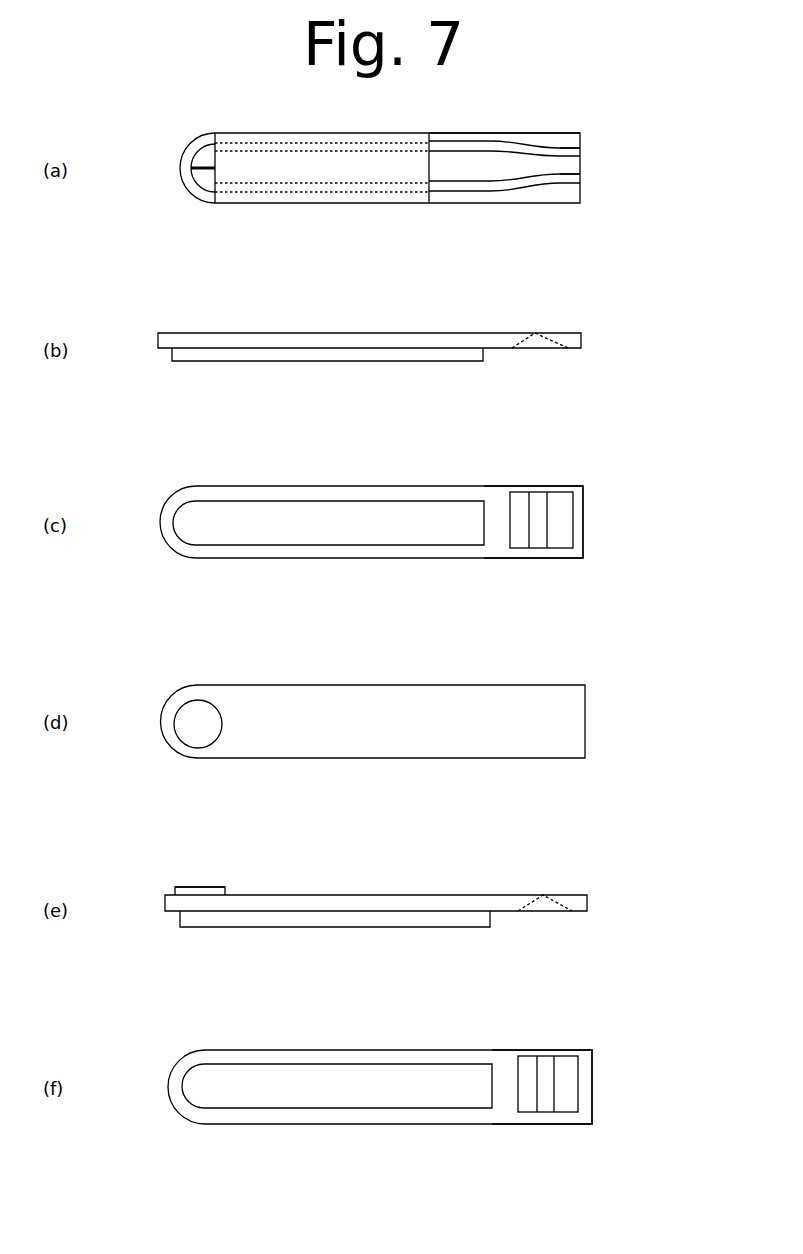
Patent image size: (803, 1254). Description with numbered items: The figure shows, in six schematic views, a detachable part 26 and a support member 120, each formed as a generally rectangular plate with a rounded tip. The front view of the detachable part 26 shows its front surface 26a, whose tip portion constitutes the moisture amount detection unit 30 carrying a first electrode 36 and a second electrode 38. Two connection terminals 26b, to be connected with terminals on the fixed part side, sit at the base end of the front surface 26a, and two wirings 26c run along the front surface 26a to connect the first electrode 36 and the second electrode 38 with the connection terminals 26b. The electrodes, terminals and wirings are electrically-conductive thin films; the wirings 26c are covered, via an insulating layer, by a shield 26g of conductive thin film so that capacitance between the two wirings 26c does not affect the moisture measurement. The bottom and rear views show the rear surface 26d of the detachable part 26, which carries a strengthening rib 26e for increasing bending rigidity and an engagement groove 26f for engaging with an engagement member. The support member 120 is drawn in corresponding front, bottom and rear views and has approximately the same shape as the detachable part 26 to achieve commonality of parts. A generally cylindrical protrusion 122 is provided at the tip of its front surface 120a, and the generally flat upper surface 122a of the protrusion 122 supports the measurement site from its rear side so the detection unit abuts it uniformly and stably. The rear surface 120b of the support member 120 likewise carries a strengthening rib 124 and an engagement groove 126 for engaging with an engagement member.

The detachable part 26 is at (694, 130).
The moisture amount detection unit 30 is at (184, 151).
The first electrode 36 is at (195, 157).
The second electrode 38 is at (195, 180).
The shield 26g is at (323, 165).
The wirings 26c is at (453, 147).
The front surface 26a is at (550, 138).
The connection terminals 26b is at (572, 151).
The strengthening rib 26e is at (357, 351).
The rear surface 26d is at (492, 348).
The engagement groove 26f is at (537, 333).
The support member 120 is at (712, 685).
The protrusion 122 is at (197, 718).
The upper surface 122a is at (217, 887).
The front surface 120a is at (403, 710).
The strengthening rib 124 is at (362, 915).
The rear surface 120b is at (498, 911).
The engagement groove 126 is at (545, 895).